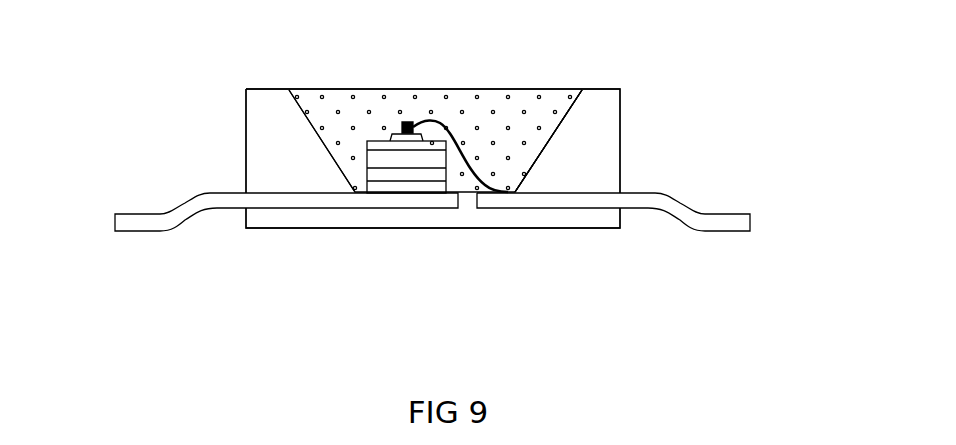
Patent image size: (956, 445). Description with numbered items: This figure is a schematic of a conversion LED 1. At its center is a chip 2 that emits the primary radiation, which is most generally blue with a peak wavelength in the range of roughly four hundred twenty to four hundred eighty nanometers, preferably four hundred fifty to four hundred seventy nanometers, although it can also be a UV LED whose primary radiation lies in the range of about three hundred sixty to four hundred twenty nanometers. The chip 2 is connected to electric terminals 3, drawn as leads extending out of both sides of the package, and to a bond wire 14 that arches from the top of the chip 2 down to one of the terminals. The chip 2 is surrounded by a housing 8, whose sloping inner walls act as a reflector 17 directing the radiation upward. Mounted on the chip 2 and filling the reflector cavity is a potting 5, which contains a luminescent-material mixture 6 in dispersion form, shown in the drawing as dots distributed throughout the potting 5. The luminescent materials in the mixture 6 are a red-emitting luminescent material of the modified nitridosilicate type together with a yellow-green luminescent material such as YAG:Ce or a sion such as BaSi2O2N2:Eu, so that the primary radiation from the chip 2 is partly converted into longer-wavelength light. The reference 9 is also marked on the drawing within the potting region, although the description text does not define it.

The conversion LED 1 is at (241, 148).
The chip 2 is at (409, 172).
The electric terminals 3 is at (302, 200).
The potting 5 is at (553, 97).
The luminescent-material mixture 6 is at (387, 95).
The housing 8 is at (603, 133).
The cavity 9 is at (499, 164).
The bond wire 14 is at (450, 120).
The reflector 17 is at (567, 119).